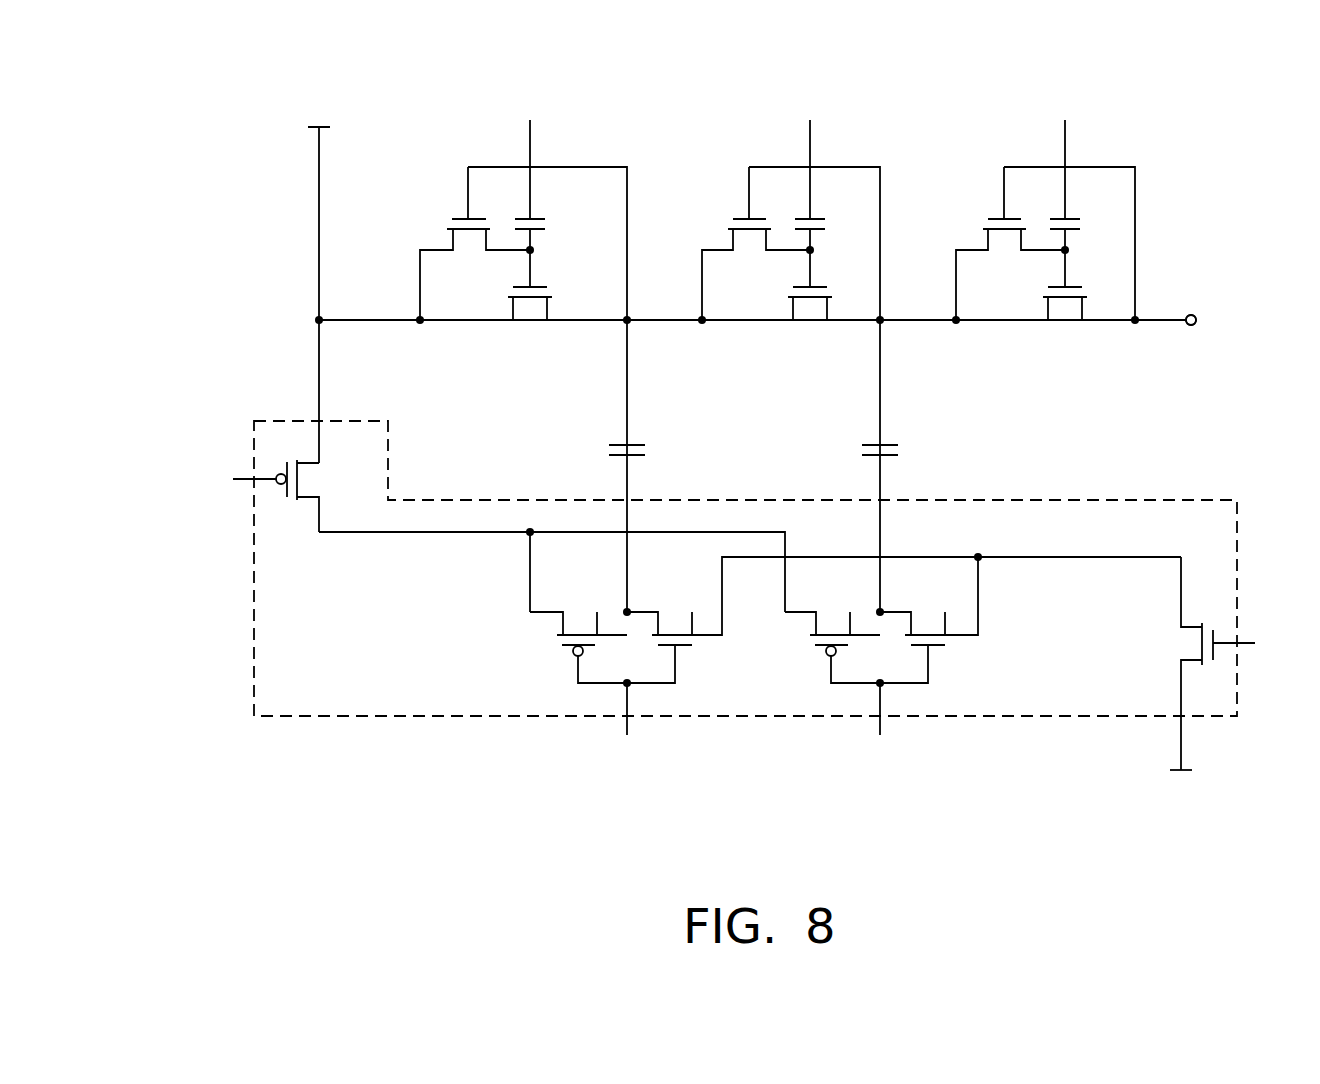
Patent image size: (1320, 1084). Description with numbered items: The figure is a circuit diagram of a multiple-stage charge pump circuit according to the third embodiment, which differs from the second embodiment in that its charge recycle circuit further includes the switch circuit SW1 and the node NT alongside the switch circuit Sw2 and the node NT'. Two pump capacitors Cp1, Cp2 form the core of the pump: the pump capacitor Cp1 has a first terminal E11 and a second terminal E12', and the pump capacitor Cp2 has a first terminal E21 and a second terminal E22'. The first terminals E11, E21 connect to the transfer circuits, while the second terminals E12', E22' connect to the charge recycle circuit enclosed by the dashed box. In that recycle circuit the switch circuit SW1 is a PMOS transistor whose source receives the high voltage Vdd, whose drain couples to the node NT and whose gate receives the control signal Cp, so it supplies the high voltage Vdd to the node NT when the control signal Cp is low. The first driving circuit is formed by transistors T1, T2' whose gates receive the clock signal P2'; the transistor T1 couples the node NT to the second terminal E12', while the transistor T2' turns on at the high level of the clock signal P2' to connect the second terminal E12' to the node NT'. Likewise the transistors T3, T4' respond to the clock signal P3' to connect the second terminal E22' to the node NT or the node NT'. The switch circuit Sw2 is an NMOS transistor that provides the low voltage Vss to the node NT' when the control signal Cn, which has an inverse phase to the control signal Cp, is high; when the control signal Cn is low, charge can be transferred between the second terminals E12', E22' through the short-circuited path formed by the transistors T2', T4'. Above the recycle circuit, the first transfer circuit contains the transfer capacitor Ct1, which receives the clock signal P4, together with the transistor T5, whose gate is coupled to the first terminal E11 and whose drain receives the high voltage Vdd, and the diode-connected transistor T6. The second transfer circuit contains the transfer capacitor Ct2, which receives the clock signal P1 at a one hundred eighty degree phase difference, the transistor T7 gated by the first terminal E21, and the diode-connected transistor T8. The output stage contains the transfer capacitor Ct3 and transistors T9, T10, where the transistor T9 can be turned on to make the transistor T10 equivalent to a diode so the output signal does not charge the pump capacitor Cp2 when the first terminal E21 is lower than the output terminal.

The high voltage Vdd is at (319, 277).
The low voltage Vss is at (1183, 786).
The clock signal P1 is at (810, 155).
The clock signal P4 is at (797, 155).
The clock signal P2' is at (628, 691).
The clock signal P3' is at (880, 691).
The transistor T1 is at (578, 645).
The transistor T2' is at (904, 620).
The transistor T3 is at (832, 645).
The transistor T4' is at (929, 620).
The transistor T5 is at (523, 243).
The transistor T6 is at (530, 315).
The transistor T7 is at (791, 243).
The transistor T8 is at (810, 315).
The transistor T9 is at (1045, 243).
The transistor T10 is at (1065, 316).
The transfer capacitor Ct1 is at (555, 249).
The transfer capacitor Ct2 is at (835, 249).
The transfer capacitor Ct3 is at (1090, 249).
The pump capacitor Cp1 is at (654, 466).
The pump capacitor Cp2 is at (907, 466).
The first terminal E11 is at (645, 446).
The second terminal E12' is at (670, 476).
The first terminal E21 is at (898, 446).
The second terminal E22' is at (923, 476).
The switch circuit SW1 is at (314, 496).
The switch circuit Sw2 is at (1180, 663).
The control signal Cp is at (233, 478).
The control signal Cn is at (1252, 644).
The node NT is at (552, 530).
The node NT' is at (951, 533).